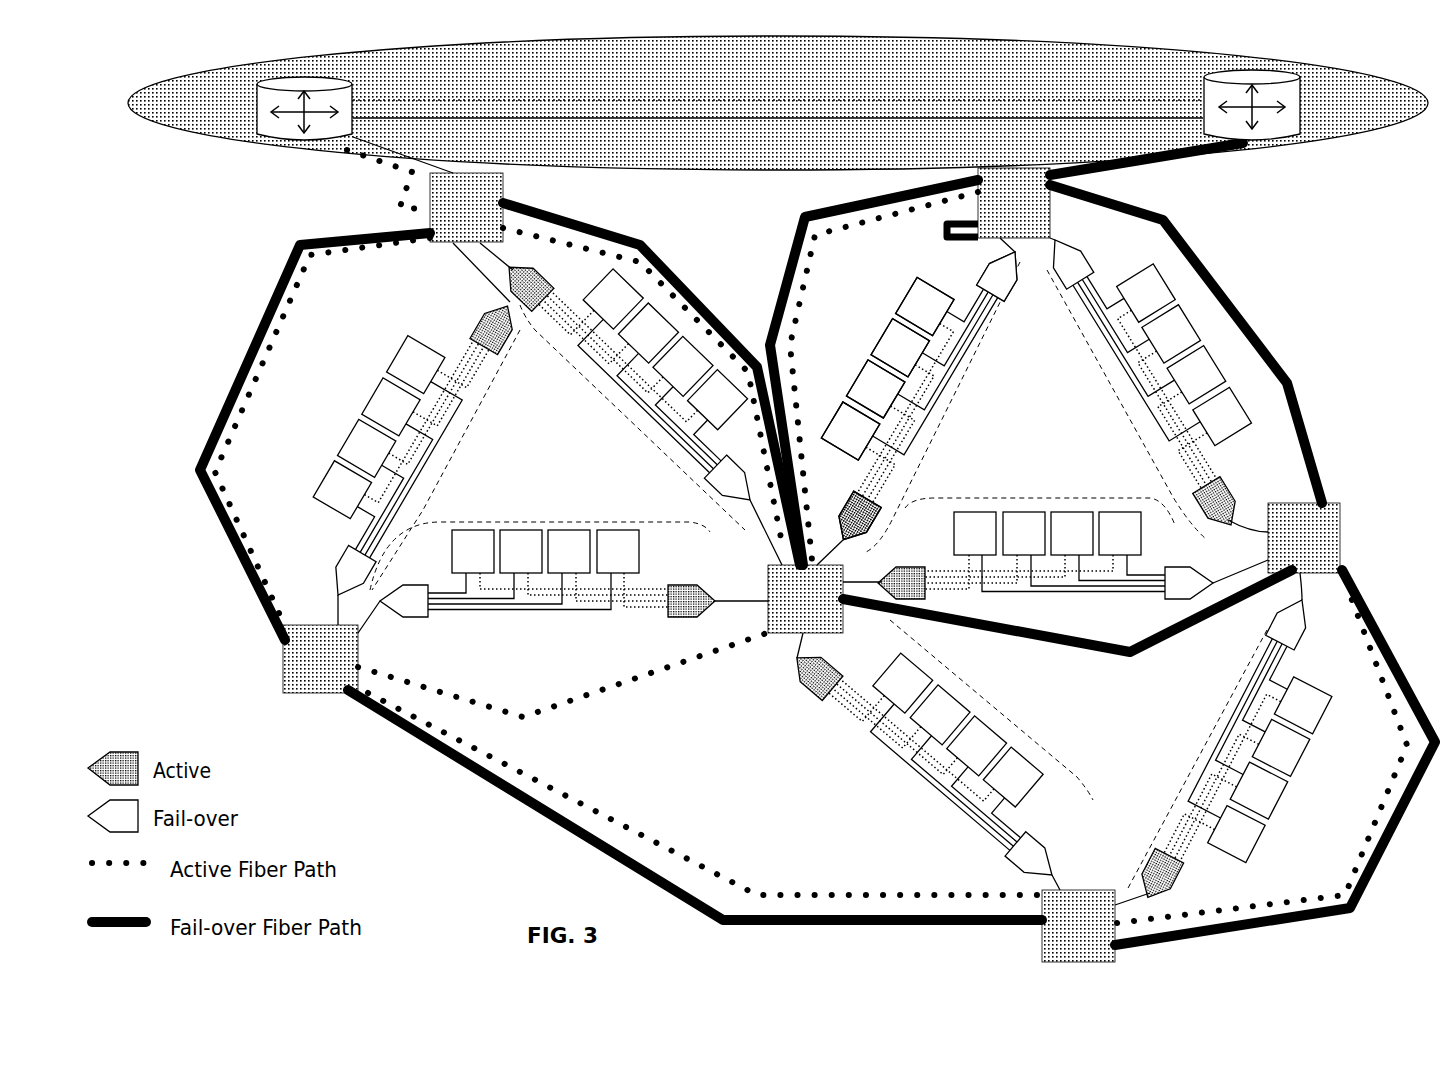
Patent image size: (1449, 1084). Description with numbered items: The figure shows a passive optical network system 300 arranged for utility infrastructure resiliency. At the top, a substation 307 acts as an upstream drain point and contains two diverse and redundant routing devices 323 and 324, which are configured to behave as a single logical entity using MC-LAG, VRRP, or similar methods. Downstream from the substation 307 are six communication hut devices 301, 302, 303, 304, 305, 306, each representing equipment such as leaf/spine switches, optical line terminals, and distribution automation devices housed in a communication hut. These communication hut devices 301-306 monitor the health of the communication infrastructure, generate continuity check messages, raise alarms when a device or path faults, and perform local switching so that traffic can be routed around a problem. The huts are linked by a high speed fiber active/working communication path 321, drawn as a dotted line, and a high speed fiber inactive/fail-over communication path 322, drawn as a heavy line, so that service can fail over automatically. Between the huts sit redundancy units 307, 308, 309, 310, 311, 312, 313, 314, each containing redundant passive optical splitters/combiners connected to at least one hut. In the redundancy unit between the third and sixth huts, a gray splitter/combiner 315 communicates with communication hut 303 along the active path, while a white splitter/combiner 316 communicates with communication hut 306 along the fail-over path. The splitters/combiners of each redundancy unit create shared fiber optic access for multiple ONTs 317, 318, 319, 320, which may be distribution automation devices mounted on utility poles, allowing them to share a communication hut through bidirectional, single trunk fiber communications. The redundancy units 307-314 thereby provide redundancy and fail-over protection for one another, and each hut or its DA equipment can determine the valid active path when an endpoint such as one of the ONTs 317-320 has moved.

The system 300 is at (1376, 210).
The communication hut device 301 is at (320, 659).
The communication hut device 302 is at (466, 207).
The communication hut device 303 is at (805, 599).
The communication hut device 304 is at (1078, 926).
The communication hut device 305 is at (1304, 538).
The communication hut device 306 is at (1014, 203).
The substation 307 is at (966, 413).
The redundancy unit 308 is at (1038, 498).
The redundancy unit 309 is at (1117, 407).
The redundancy unit 310 is at (1200, 738).
The redundancy unit 311 is at (983, 700).
The redundancy unit 312 is at (630, 430).
The redundancy unit 313 is at (562, 521).
The redundancy unit 314 is at (448, 466).
The splitter/combiner 315 is at (856, 519).
The splitter/combiner 316 is at (1003, 273).
The ONT 317 is at (850, 431).
The ONT 318 is at (875, 389).
The ONT 319 is at (900, 348).
The ONT 320 is at (925, 306).
The active/working communication path 321 is at (588, 820).
The inactive/fail-over communication path 322 is at (495, 786).
The routing device 323 is at (357, 100).
The routing device 324 is at (1303, 112).